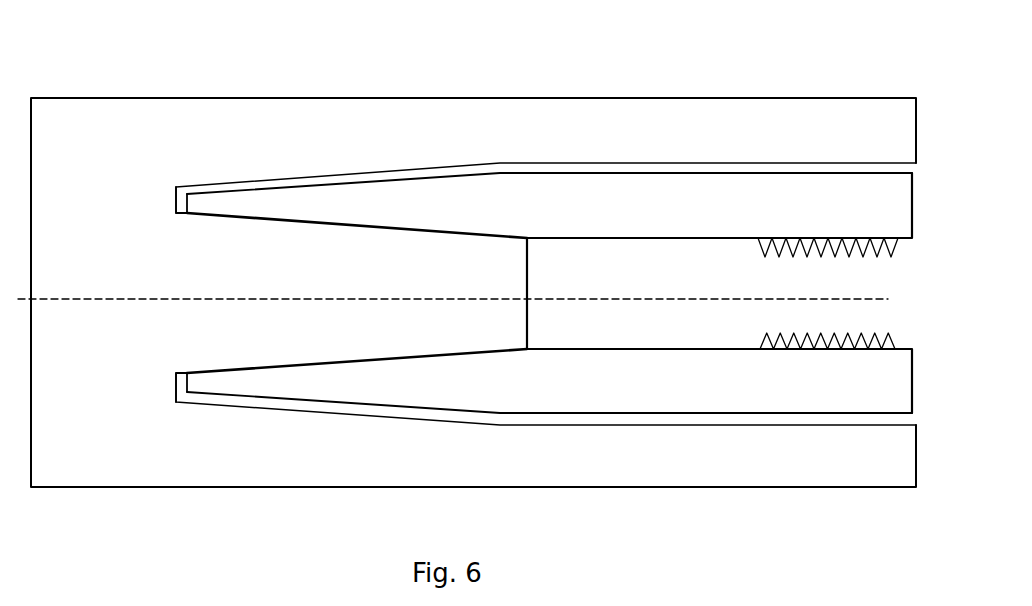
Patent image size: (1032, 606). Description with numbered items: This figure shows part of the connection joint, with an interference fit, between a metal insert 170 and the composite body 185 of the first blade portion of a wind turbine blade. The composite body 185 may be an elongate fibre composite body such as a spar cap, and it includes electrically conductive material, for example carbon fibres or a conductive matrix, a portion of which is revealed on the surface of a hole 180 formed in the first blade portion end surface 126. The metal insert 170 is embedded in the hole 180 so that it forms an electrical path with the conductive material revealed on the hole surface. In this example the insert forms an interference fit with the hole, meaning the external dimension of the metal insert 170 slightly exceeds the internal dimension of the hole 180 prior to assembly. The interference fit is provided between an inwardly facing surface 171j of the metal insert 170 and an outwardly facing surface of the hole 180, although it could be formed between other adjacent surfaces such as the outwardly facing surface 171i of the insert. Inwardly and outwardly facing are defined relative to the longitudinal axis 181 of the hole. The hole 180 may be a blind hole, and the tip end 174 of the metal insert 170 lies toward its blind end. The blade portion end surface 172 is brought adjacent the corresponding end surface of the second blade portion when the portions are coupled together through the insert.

The first blade portion end surface 126 is at (917, 128).
The metal insert 170 is at (678, 198).
The outwardly facing surface of the metal insert 171i is at (313, 186).
The inwardly facing surface of the metal insert 171j is at (260, 219).
The first blade portion end surface 172 is at (912, 202).
The tip end 174 is at (190, 192).
The hole 180 is at (258, 181).
The longitudinal axis 181 is at (598, 299).
The composite body 185 is at (128, 282).